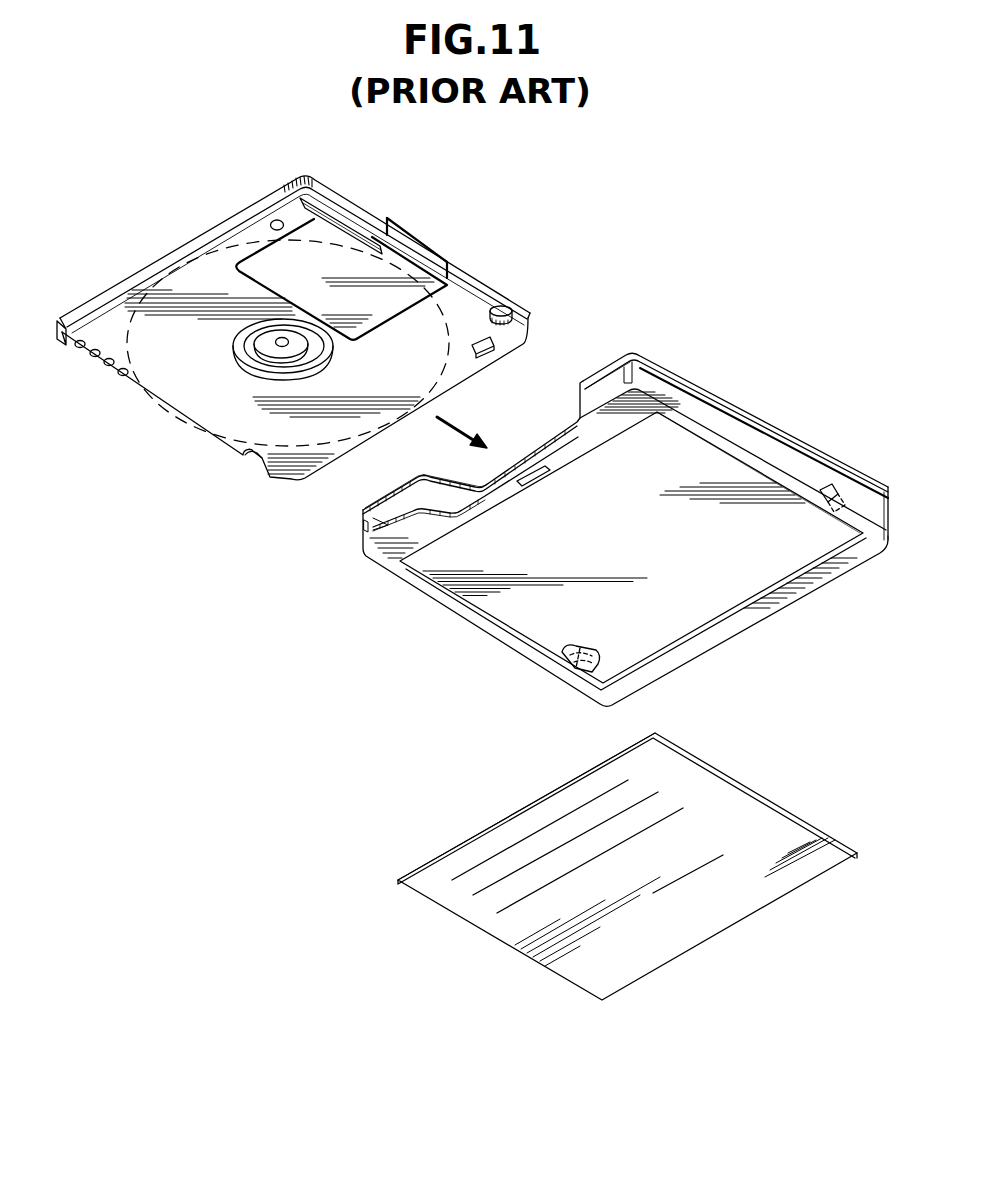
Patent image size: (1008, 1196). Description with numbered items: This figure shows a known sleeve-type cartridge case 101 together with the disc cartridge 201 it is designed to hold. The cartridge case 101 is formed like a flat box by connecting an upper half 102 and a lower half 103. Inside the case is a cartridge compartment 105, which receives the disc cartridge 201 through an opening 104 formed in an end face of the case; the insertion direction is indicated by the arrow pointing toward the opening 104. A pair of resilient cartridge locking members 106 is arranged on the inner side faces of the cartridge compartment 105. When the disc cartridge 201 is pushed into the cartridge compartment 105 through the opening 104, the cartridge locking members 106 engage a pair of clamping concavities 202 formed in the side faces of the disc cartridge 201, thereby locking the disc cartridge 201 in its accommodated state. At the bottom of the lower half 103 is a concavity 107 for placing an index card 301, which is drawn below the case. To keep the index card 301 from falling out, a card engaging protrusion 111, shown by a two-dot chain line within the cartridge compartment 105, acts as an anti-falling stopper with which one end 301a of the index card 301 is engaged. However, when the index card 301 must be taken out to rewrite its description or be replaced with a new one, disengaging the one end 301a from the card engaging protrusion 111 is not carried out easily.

The disc cartridge 201 is at (441, 238).
The clamping concavities 202 is at (499, 306).
The cartridge case 101 is at (726, 387).
The upper half 102 is at (889, 491).
The lower half 103 is at (893, 534).
The opening 104 is at (479, 482).
The cartridge compartment 105 is at (613, 467).
The cartridge locking members 106 is at (826, 488).
The concavity 107 is at (718, 590).
The card engaging protrusion 111 is at (531, 478).
The index card 301 is at (771, 785).
The one end of the index card 301a is at (487, 828).